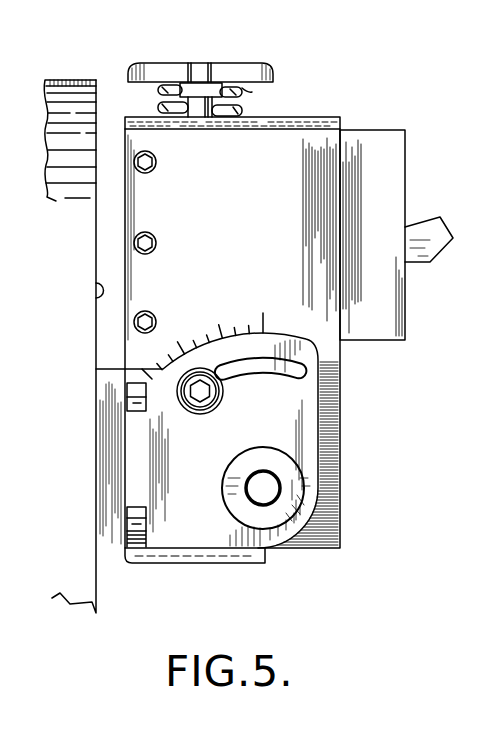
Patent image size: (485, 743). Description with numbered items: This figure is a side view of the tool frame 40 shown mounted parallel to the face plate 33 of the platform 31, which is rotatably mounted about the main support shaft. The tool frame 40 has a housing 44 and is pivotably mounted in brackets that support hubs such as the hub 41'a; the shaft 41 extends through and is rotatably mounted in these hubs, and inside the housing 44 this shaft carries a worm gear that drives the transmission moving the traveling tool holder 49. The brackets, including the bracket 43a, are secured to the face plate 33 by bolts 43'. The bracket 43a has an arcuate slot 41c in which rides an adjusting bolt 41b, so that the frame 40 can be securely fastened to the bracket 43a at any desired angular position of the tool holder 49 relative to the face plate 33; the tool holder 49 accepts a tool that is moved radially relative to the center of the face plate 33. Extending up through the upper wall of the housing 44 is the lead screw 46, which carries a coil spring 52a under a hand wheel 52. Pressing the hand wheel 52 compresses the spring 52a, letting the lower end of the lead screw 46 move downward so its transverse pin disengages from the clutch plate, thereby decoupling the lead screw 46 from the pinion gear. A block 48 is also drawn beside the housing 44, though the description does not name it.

The rail 31 is at (76, 78).
The guide way 33 is at (96, 290).
The main body 40 is at (338, 117).
The pivot 41 is at (303, 488).
The clamping bolt 41b is at (193, 410).
The arcuate slot 41c is at (260, 384).
The pivot hub 41'a is at (296, 557).
The clamp block 43' is at (182, 487).
The tilt plate 43a is at (318, 417).
The carriage 44 is at (246, 205).
The stem 46 is at (201, 112).
The block 48 is at (405, 140).
The pointer 49 is at (418, 258).
The knob 52 is at (160, 68).
The knob nut 52a is at (252, 92).